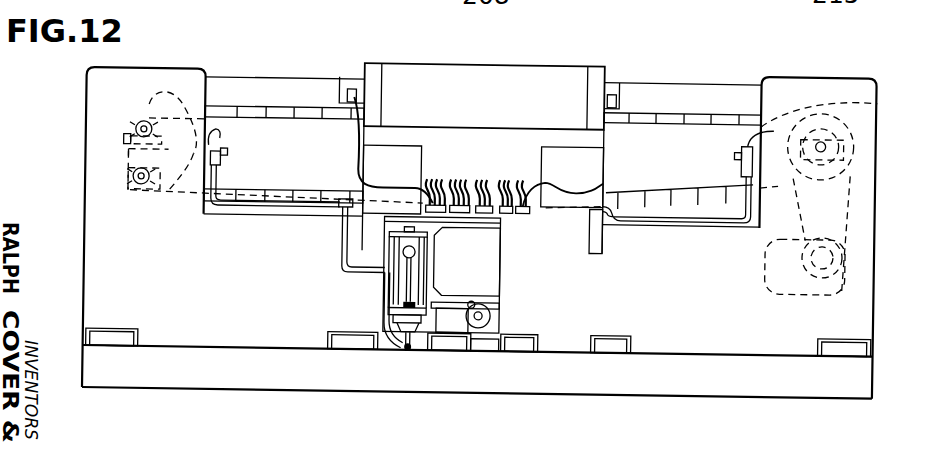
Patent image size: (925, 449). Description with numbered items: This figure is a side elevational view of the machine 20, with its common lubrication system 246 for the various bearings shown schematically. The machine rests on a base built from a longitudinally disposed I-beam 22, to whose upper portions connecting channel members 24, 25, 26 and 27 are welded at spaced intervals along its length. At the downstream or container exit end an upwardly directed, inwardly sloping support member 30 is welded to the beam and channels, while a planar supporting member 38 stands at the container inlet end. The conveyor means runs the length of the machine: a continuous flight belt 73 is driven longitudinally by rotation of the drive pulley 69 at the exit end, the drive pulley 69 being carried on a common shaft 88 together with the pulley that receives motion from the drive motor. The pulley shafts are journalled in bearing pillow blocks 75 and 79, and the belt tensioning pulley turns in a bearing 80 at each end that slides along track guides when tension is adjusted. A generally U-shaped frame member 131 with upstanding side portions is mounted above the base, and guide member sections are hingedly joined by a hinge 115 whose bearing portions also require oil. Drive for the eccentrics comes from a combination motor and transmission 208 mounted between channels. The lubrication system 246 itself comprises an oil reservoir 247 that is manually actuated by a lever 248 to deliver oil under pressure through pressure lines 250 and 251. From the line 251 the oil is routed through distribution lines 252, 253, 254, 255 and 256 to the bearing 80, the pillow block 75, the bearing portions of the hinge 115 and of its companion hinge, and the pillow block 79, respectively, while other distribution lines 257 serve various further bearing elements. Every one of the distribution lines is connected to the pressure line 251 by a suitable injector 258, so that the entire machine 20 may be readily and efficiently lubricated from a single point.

The machine 20 is at (478, 57).
The I-beam 22 is at (622, 370).
The channel member 24 is at (843, 326).
The channel member 25 is at (620, 328).
The channel member 26 is at (352, 333).
The channel member 27 is at (135, 326).
The support member 30 is at (690, 272).
The planar supporting member 38 is at (226, 260).
The drive pulley 69 is at (873, 92).
The flight belt 73 is at (138, 167).
The bearing pillow block 75 is at (142, 120).
The bearing pillow block 79 is at (827, 137).
The bearing 80 is at (128, 178).
The common shaft 88 is at (850, 162).
The hinge 115 is at (343, 80).
The U-shaped frame member 131 is at (532, 85).
The combination motor and transmission 208 is at (471, 253).
The common lubrication system 246 is at (350, 299).
The oil reservoir 247 is at (400, 262).
The lever 248 is at (419, 264).
The pressure line 250 is at (340, 212).
The pressure line 251 is at (293, 196).
The distribution line 252 is at (185, 153).
The distribution line 253 is at (163, 99).
The distribution line 254 is at (357, 127).
The distribution line 255 is at (552, 146).
The distribution line 256 is at (813, 118).
The distribution lines 257 is at (435, 180).
The injector 258 is at (215, 152).